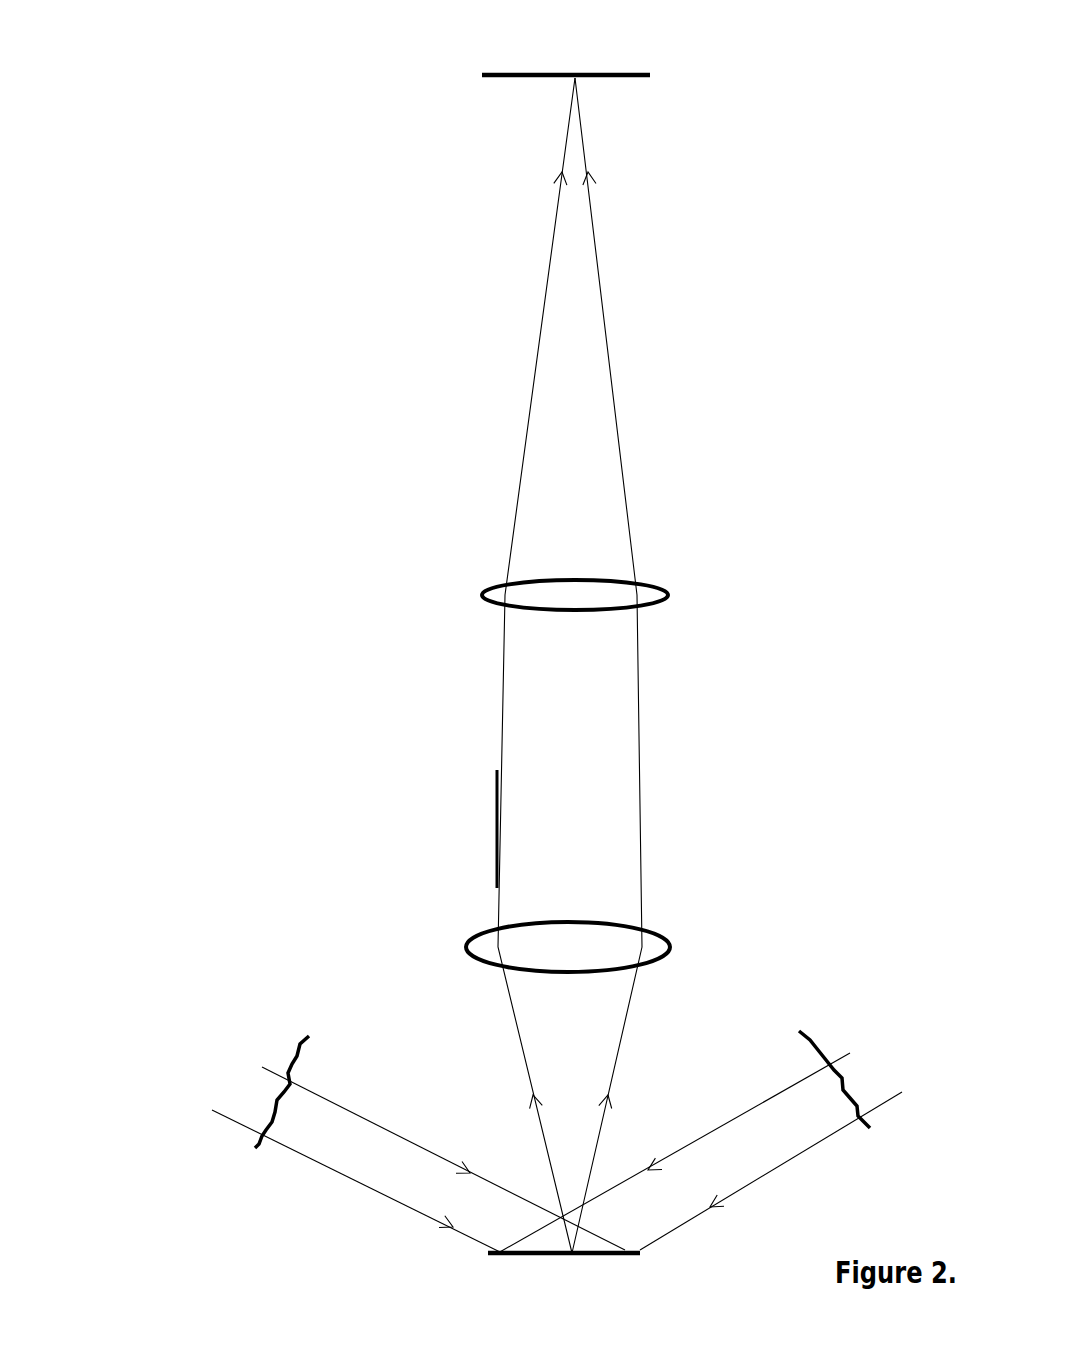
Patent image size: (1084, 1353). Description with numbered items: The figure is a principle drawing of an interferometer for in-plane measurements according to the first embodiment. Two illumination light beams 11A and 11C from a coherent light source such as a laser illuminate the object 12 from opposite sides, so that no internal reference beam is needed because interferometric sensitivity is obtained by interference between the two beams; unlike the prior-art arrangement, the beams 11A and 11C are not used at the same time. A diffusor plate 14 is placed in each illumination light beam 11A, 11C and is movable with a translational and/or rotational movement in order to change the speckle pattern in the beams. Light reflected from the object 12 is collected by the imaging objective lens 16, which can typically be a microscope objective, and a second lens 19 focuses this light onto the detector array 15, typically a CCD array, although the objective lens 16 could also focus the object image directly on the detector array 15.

The detector array 15 is at (503, 74).
The second lens 19 is at (658, 583).
The imaging objective lens 16 is at (668, 940).
The object 12 is at (615, 1255).
The illumination light beam 11A is at (388, 1140).
The illumination light beam 11C is at (727, 1125).
The diffusor plate 14 is at (302, 1035).